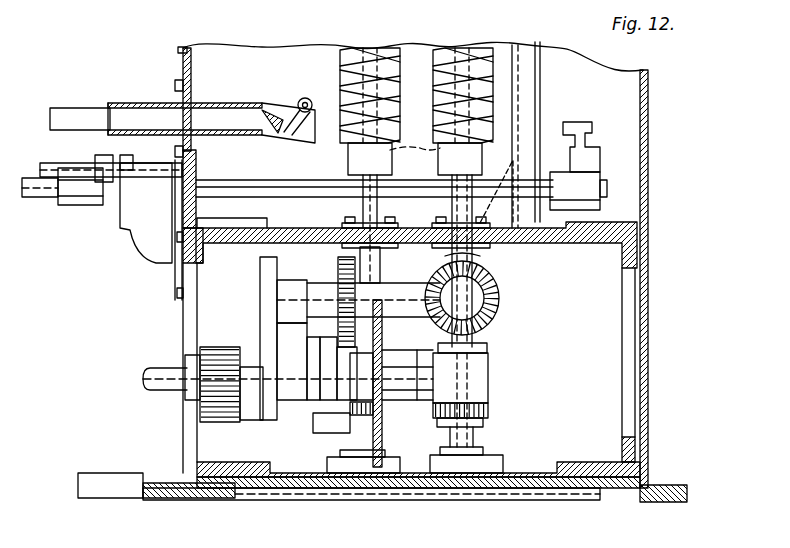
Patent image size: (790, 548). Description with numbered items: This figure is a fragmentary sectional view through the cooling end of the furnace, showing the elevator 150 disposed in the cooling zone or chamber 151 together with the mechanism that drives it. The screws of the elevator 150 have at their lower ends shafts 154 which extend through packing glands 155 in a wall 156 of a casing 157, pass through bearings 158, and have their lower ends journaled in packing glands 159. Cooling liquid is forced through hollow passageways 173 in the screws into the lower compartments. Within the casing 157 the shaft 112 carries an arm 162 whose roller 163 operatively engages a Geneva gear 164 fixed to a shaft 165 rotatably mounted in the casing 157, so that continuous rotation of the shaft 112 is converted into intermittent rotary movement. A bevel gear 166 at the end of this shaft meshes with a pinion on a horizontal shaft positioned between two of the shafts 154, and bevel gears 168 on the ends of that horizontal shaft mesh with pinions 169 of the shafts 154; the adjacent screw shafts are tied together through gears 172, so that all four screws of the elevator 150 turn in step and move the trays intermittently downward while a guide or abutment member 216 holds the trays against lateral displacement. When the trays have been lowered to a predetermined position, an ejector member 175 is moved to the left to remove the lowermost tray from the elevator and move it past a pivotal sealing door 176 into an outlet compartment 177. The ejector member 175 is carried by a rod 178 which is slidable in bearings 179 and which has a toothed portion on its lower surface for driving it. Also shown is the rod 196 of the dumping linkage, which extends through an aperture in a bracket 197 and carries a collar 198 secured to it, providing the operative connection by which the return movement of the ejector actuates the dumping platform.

The shaft 112 is at (148, 388).
The elevator 150 is at (438, 65).
The cooling zone or chamber 151 is at (630, 97).
The shafts 154 is at (375, 208).
The packing glands 155 is at (345, 222).
The wall 156 is at (254, 240).
The casing 157 is at (600, 333).
The bearings 158 is at (490, 384).
The packing glands 159 is at (495, 462).
The arm 162 is at (330, 420).
The roller 163 is at (345, 450).
The Geneva gear 164 is at (380, 286).
The shaft 165 is at (320, 292).
The bevel gear 166 is at (462, 258).
The bevel gears 168 is at (497, 310).
The pinions 169 is at (488, 350).
The gears 172 is at (492, 410).
The hollow passageways 173 is at (382, 440).
The ejector member 175 is at (590, 165).
The pivotal sealing door 176 is at (280, 120).
The outlet compartment 177 is at (128, 103).
The rod 178 is at (232, 188).
The bearings 179 is at (130, 216).
The rod 196 is at (40, 170).
The bracket 197 is at (72, 198).
The collar 198 is at (108, 163).
The guide or abutment member 216 is at (535, 118).